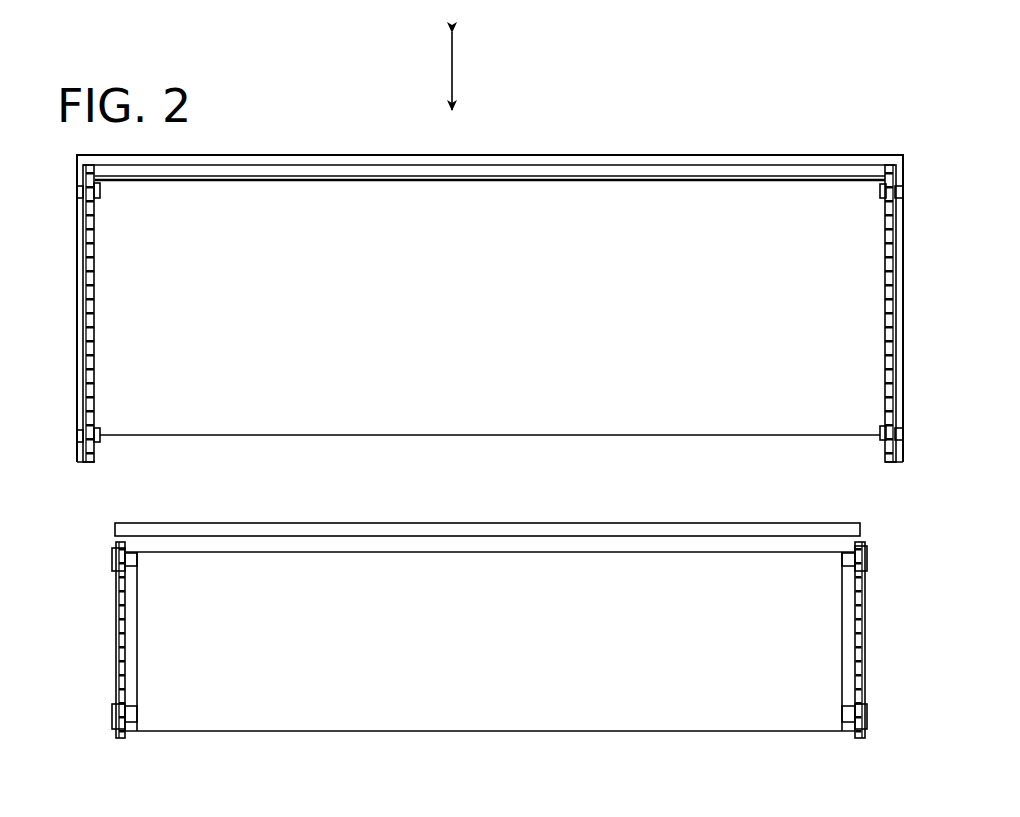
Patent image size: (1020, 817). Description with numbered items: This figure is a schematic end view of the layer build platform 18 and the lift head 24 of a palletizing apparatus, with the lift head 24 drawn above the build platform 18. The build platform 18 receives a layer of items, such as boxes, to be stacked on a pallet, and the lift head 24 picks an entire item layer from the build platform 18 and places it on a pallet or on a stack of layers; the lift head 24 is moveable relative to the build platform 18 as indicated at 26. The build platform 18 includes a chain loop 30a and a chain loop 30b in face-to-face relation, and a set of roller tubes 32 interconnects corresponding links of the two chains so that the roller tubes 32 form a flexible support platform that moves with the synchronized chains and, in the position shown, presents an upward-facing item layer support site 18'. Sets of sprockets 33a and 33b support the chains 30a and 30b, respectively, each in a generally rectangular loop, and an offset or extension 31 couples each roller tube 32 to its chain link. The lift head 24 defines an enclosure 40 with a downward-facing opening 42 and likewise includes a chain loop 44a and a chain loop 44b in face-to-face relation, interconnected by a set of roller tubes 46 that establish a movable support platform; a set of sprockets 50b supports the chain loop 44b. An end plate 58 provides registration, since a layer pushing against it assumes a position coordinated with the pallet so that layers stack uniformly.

The lift head 24 is at (748, 143).
The movement indication 26 is at (452, 70).
The enclosure 40 is at (308, 153).
The roller tubes 46 is at (373, 171).
The chain loop 44a is at (880, 247).
The chain loop 44b is at (97, 240).
The sprockets 50b is at (99, 192).
The end plate 58 is at (447, 304).
The downward-facing opening 42 is at (634, 394).
The item layer support site 18' is at (490, 596).
The layer build platform 18 is at (490, 764).
The roller tubes 32 is at (563, 534).
The extension 31 is at (114, 558).
The sprockets 33a is at (842, 560).
The sprockets 33b is at (138, 560).
The chain loop 30a is at (842, 617).
The chain loop 30b is at (128, 612).